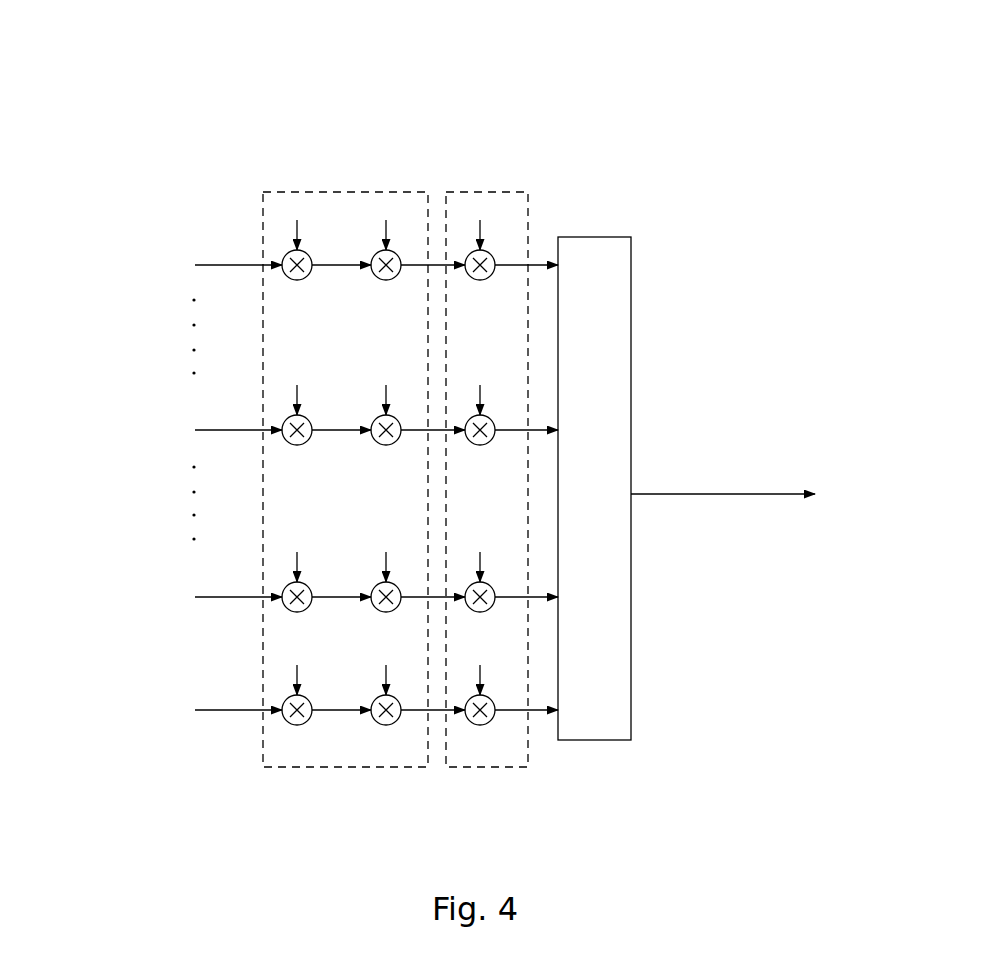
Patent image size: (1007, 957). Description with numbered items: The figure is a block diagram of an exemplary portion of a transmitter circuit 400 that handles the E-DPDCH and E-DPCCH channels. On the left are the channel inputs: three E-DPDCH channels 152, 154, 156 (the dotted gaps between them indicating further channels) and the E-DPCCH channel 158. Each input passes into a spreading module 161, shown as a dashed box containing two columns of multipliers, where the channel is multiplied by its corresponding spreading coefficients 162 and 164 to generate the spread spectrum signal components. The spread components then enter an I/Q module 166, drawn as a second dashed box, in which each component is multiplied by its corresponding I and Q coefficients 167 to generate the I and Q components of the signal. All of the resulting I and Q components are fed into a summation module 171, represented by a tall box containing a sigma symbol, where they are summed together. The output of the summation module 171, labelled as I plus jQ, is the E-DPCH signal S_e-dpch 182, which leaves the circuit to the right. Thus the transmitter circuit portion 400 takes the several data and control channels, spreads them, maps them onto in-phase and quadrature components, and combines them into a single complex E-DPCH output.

The transmitter circuit portion 400 is at (572, 93).
The E-DPDCH channel input 152 is at (155, 235).
The E-DPDCH channel input 154 is at (138, 397).
The E-DPDCH channel input 156 is at (140, 573).
The E-DPCCH channel 158 is at (140, 680).
The spreading module 161 is at (340, 768).
The spreading coefficient 162 is at (295, 248).
The spreading coefficient 164 is at (378, 248).
The I/Q module 166 is at (502, 768).
The I and Q coefficients 167 is at (467, 257).
The summation module 171 is at (590, 237).
The E-DPCH signal S_e-dpch 182 is at (770, 540).